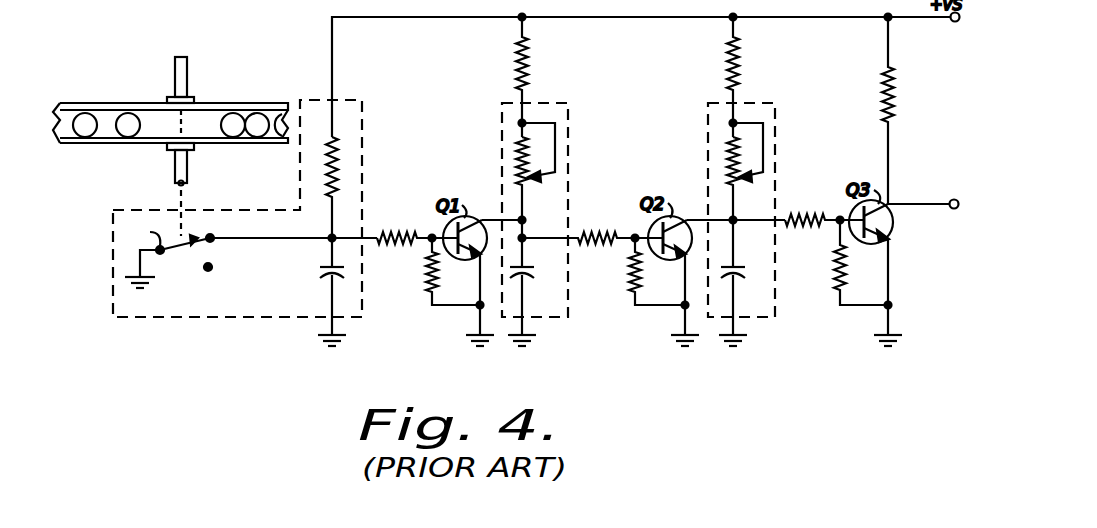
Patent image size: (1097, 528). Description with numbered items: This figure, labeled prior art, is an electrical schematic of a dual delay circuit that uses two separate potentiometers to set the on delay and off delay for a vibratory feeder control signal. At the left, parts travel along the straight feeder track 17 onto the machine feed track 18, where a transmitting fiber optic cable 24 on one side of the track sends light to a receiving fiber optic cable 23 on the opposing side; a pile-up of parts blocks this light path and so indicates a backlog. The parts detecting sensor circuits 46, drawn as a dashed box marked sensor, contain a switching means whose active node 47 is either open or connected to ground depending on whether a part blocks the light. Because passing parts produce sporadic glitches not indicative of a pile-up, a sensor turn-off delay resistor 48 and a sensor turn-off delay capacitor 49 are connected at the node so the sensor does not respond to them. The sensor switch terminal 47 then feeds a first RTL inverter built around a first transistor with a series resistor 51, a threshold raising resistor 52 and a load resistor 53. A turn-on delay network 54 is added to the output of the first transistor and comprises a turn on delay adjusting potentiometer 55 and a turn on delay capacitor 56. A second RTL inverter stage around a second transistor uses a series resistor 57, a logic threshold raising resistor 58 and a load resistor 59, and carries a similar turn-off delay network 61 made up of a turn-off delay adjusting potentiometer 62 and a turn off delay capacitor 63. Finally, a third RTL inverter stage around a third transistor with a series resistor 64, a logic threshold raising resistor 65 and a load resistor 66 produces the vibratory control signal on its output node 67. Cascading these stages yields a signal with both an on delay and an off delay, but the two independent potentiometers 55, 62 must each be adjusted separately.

The straight feeder track 17 is at (105, 94).
The machine feed track 18 is at (277, 95).
The receiving fiber optic cable 23 is at (175, 172).
The transmitting fiber optic cable 24 is at (172, 72).
The parts detecting sensor circuits 46 is at (150, 320).
The active node 47 is at (212, 236).
The sensor turn-off delay resistor 48 is at (346, 160).
The sensor turn-off delay capacitor 49 is at (318, 270).
The series resistor 51 is at (396, 232).
The threshold raising resistor 52 is at (426, 274).
The load resistor 53 is at (514, 60).
The turn-on delay network 54 is at (550, 100).
The turn on delay adjusting potentiometer 55 is at (514, 160).
The turn on delay capacitor 56 is at (536, 280).
The series resistor 57 is at (600, 232).
The logic threshold raising resistor 58 is at (629, 288).
The load resistor 59 is at (726, 62).
The turn-off delay network 61 is at (766, 92).
The turn-off delay adjusting potentiometer 62 is at (724, 160).
The turn off delay capacitor 63 is at (748, 272).
The series resistor 64 is at (806, 214).
The logic threshold raising resistor 65 is at (834, 276).
The load resistor 66 is at (898, 96).
The output node 67 is at (954, 209).